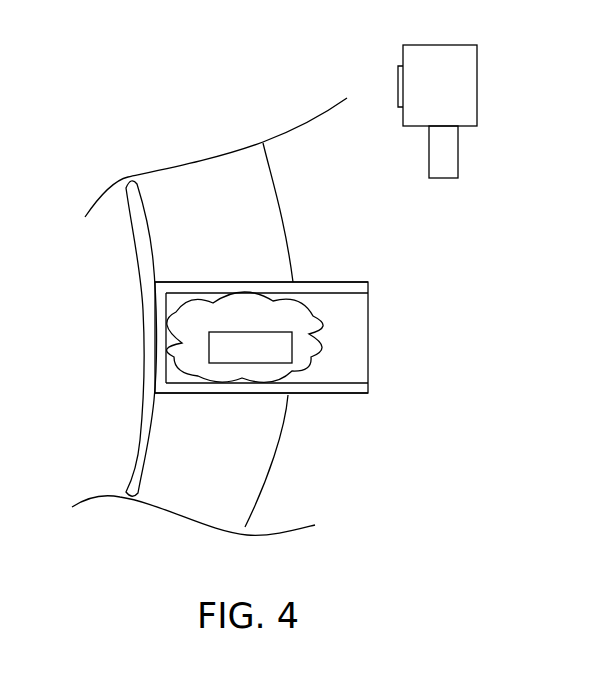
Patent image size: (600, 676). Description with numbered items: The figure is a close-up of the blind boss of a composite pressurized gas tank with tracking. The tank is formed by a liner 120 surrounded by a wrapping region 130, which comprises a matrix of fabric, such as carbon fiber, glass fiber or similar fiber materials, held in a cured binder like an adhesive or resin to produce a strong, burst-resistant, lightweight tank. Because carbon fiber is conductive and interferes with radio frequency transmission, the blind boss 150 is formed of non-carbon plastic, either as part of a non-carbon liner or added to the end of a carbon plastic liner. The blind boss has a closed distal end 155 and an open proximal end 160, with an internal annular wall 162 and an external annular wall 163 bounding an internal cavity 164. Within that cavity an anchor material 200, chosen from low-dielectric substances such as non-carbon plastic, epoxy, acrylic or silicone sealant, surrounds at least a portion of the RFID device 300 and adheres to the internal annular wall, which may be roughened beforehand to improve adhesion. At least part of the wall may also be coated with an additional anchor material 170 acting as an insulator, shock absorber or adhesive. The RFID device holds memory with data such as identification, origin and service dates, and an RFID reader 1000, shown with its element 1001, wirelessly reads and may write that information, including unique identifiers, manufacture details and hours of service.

The liner 120 is at (137, 266).
The wrapping region 130 is at (211, 475).
The blind boss 150 is at (228, 322).
The closed distal end 155 is at (197, 339).
The open proximal end 160 is at (262, 322).
The internal annular wall 162 is at (345, 292).
The external annular wall 163 is at (327, 282).
The internal cavity 164 is at (361, 346).
The additional anchor material 170 is at (329, 377).
The anchor material 200 is at (258, 325).
The RFID device 300 is at (251, 358).
The RFID reader 1000 is at (463, 96).
The connector 1001 is at (398, 82).